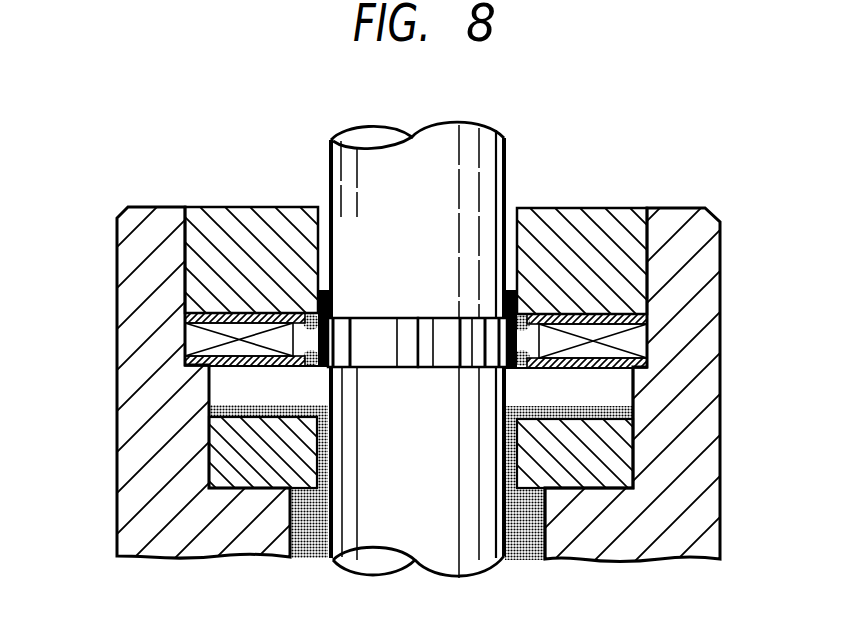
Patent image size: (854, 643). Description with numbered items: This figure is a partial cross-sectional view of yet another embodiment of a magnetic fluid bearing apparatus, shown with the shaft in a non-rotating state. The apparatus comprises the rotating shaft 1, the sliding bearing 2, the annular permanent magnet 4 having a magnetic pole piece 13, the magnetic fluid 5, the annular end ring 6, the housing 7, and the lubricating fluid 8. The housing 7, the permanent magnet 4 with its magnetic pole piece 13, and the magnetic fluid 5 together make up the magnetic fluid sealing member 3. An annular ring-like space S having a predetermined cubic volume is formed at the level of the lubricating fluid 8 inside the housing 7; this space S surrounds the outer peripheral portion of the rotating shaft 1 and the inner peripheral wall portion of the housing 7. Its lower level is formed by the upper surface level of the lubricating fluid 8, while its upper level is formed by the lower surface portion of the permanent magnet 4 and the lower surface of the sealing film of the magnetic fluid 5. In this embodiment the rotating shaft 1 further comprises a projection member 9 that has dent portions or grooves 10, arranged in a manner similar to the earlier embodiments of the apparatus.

The rotating shaft 1 is at (473, 173).
The sliding bearing 2 is at (223, 462).
The magnetic fluid sealing member 3 is at (603, 413).
The annular permanent magnet 4 is at (640, 343).
The magnetic fluid 5 is at (183, 340).
The annular end ring 6 is at (251, 222).
The housing 7 is at (140, 289).
The lubricating fluid 8 is at (318, 557).
The projection member 9 is at (476, 335).
The grooves 10 is at (408, 335).
The magnetic pole piece 13 is at (603, 368).
The space S is at (220, 388).